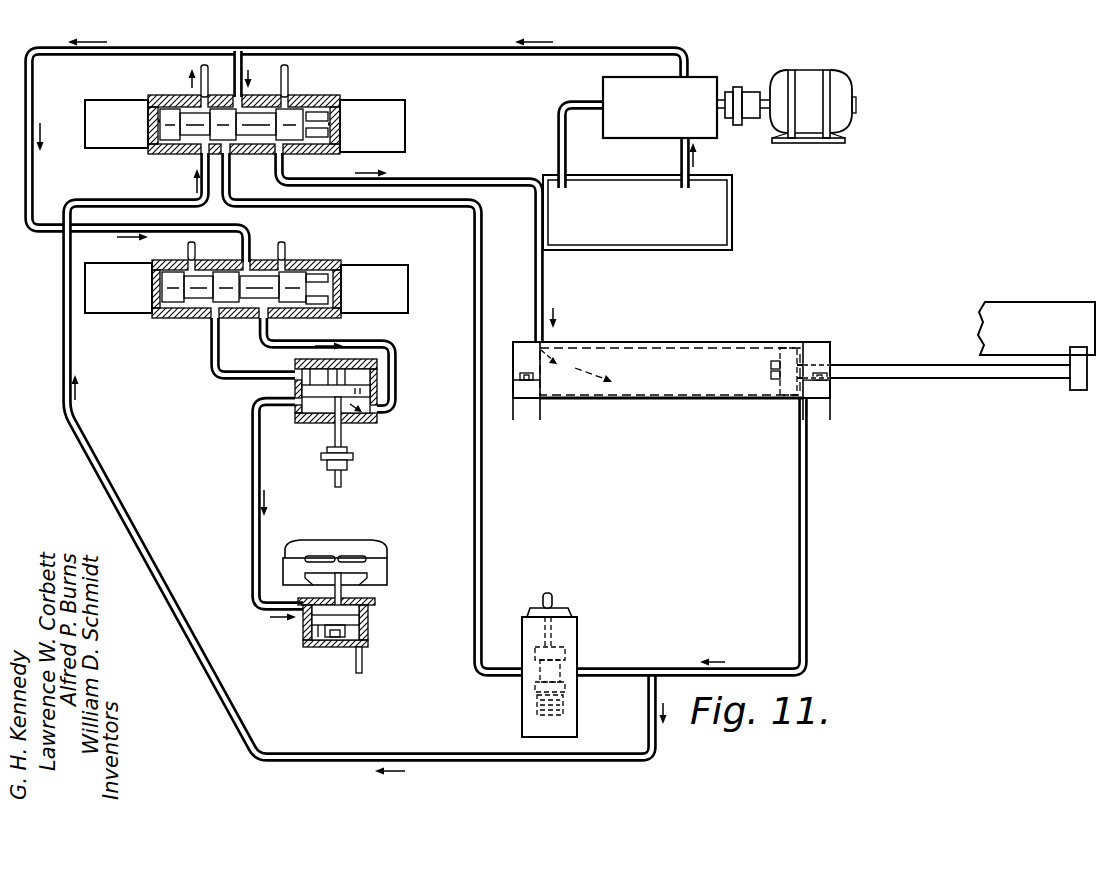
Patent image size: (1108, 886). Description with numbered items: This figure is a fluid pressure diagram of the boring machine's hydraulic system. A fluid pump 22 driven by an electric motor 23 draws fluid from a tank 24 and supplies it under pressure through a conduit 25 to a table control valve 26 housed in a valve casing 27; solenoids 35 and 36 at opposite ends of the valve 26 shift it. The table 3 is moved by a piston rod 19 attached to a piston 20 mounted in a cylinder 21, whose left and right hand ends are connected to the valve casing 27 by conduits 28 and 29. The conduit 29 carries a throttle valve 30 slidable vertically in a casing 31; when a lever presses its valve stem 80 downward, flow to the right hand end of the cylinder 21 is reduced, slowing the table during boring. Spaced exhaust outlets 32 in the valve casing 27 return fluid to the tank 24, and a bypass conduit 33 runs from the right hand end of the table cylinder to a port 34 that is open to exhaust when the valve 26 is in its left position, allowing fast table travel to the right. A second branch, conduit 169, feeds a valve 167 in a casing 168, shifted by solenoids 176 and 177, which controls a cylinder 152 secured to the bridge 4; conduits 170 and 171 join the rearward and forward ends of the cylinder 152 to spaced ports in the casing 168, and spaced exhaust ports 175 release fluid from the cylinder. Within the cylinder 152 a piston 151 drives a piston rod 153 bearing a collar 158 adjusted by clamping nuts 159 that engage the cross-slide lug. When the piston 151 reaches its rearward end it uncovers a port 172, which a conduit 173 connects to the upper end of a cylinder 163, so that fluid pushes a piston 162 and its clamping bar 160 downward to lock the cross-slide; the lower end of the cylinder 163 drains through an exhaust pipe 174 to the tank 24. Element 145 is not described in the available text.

The table 3 is at (1010, 312).
The bridge 4 is at (376, 598).
The piston rod 19 is at (937, 376).
The piston 20 is at (776, 392).
The cylinder 21 is at (650, 402).
The fluid pump 22 is at (639, 132).
The electric motor 23 is at (803, 75).
The tank 24 is at (718, 221).
The conduit 25 is at (475, 53).
The table control valve 26 is at (300, 116).
The valve casing 27 is at (338, 100).
The conduit 28 is at (427, 177).
The conduit 29 is at (483, 278).
The throttle valve 30 is at (566, 690).
The casing 31 is at (578, 622).
The exhaust outlets 32 is at (208, 82).
The bypass conduit 33 is at (200, 192).
The port 34 is at (200, 149).
The solenoid 35 is at (110, 107).
The solenoid 36 is at (405, 110).
The valve stem 80 is at (552, 606).
The housing 145 is at (388, 572).
The piston 151 is at (360, 390).
The cylinder 152 is at (378, 425).
The piston rod 153 is at (339, 486).
The collar 158 is at (350, 455).
The clamping nuts 159 is at (342, 468).
The clamping bars 160 is at (372, 547).
The piston 162 is at (370, 620).
The cylinder 163 is at (370, 643).
The valve 167 is at (177, 298).
The casing 168 is at (157, 320).
The conduit 169 is at (52, 190).
The conduit 170 is at (211, 362).
The conduit 171 is at (396, 352).
The port 172 is at (298, 407).
The conduit 173 is at (250, 513).
The exhaust pipe 174 is at (355, 665).
The exhaust ports 175 is at (279, 246).
The solenoid 176 is at (97, 303).
The solenoid 177 is at (405, 278).